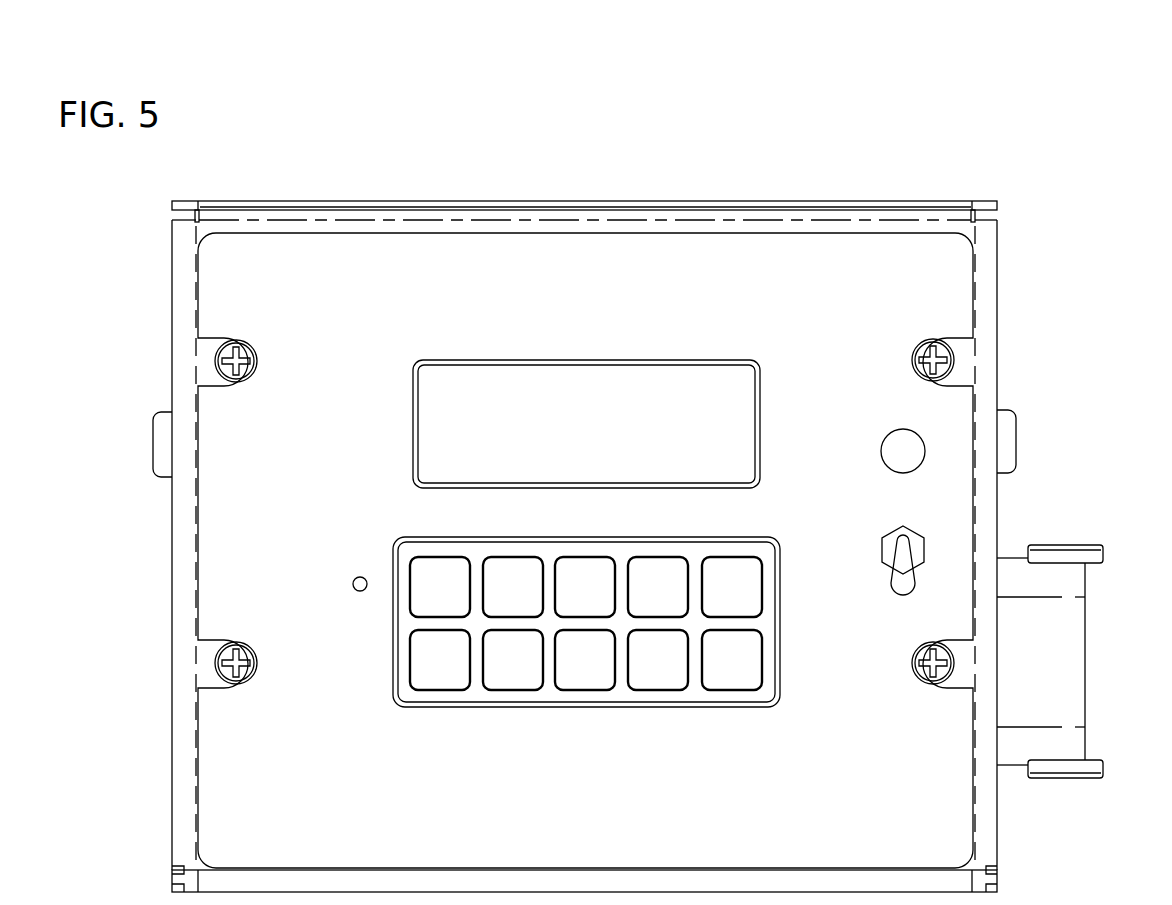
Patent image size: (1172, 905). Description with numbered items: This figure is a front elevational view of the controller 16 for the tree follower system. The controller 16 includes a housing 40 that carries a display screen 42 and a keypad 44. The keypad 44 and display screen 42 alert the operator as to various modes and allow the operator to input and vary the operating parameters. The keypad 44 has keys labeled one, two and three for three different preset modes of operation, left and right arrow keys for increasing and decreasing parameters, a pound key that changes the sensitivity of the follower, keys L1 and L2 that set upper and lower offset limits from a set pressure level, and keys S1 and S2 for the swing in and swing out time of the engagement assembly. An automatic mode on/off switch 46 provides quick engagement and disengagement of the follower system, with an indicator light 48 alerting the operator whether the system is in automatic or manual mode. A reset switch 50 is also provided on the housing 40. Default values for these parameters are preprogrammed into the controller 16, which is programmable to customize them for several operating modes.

The controller 16 is at (1068, 200).
The housing 40 is at (743, 258).
The display screen 42 is at (515, 427).
The keypad 44 is at (760, 692).
The automatic mode on/off switch 46 is at (921, 549).
The indicator light 48 is at (911, 456).
The reset switch 50 is at (356, 582).